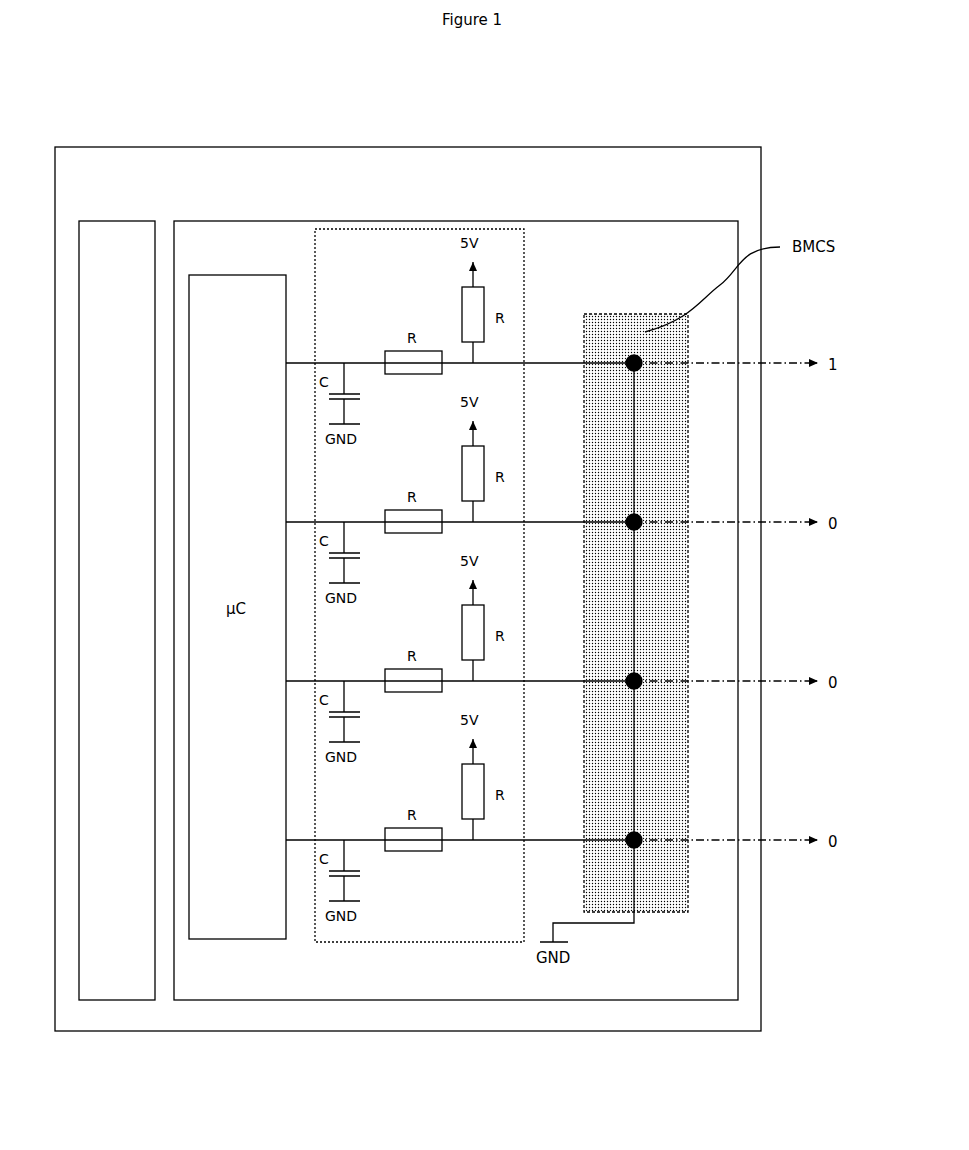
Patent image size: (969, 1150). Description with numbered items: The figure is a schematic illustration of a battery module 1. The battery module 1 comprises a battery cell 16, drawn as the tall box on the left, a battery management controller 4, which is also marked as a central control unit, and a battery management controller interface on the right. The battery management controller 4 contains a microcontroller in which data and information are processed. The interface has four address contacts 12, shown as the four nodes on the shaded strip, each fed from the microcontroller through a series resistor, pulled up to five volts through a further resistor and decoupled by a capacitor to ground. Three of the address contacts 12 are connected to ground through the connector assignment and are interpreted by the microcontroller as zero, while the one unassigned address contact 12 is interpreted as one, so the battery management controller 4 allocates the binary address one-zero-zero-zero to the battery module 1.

The battery module 1 is at (139, 137).
The battery management controller (BMC) / cell sensor (ZS) 4 is at (270, 245).
The address contacts 12 is at (642, 365).
The battery cell 16 is at (117, 1000).